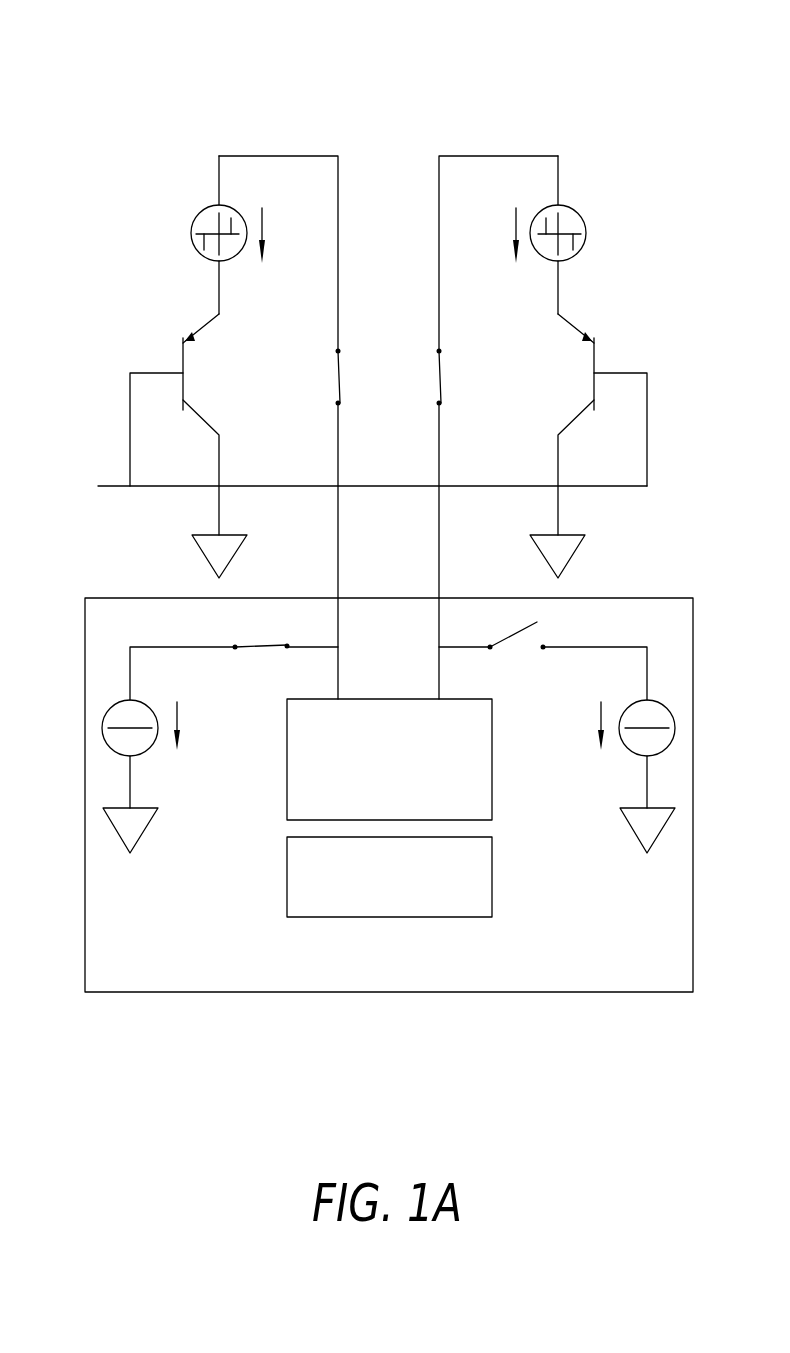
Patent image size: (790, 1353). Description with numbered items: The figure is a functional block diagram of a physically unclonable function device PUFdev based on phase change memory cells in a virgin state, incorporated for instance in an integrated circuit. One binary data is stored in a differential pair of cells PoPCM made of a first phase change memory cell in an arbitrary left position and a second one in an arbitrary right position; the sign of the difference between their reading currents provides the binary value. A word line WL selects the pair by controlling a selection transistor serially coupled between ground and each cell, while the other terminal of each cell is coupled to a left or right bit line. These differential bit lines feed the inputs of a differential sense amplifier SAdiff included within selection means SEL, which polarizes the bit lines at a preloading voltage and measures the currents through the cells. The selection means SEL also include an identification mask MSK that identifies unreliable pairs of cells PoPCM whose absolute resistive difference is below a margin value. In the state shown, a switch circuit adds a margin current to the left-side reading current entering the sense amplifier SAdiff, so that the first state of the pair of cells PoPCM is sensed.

The physically unclonable function device PUFdev is at (104, 104).
The differential pair of phase change memory cells PoPCM is at (357, 114).
The word line WL is at (352, 485).
The differential sense amplifier SAdiff is at (389, 759).
The identification mask MSK is at (389, 877).
The selection means SEL is at (389, 795).